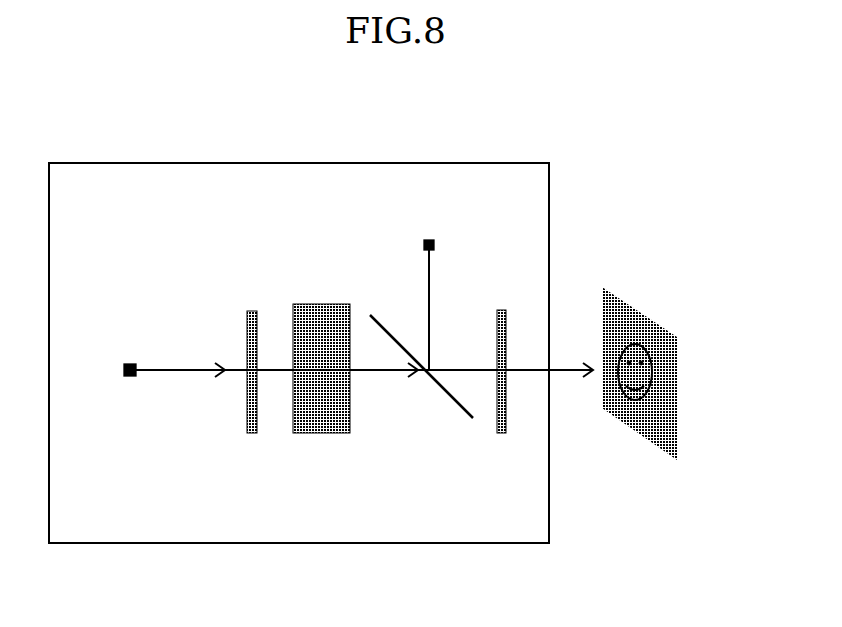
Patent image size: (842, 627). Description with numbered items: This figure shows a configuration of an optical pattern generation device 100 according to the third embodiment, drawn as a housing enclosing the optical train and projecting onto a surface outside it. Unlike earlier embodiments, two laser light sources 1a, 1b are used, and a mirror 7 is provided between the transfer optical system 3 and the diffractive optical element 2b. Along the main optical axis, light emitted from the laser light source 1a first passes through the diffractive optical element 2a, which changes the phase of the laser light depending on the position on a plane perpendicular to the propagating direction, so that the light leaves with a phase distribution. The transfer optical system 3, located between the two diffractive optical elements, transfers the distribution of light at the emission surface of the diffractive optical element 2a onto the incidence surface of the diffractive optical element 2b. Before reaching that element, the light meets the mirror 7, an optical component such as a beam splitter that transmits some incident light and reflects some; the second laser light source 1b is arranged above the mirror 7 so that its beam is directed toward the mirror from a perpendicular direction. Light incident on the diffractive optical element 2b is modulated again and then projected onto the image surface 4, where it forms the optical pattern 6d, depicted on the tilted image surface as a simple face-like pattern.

The optical pattern generation device 100 is at (293, 163).
The laser light source 1a is at (130, 364).
The laser light source 1b is at (428, 245).
The diffractive optical element 2a is at (253, 311).
The diffractive optical element 2b is at (500, 310).
The transfer optical system 3 is at (320, 304).
The mirror 7 is at (447, 398).
The image surface 4 is at (620, 300).
The optical pattern 6d is at (658, 362).